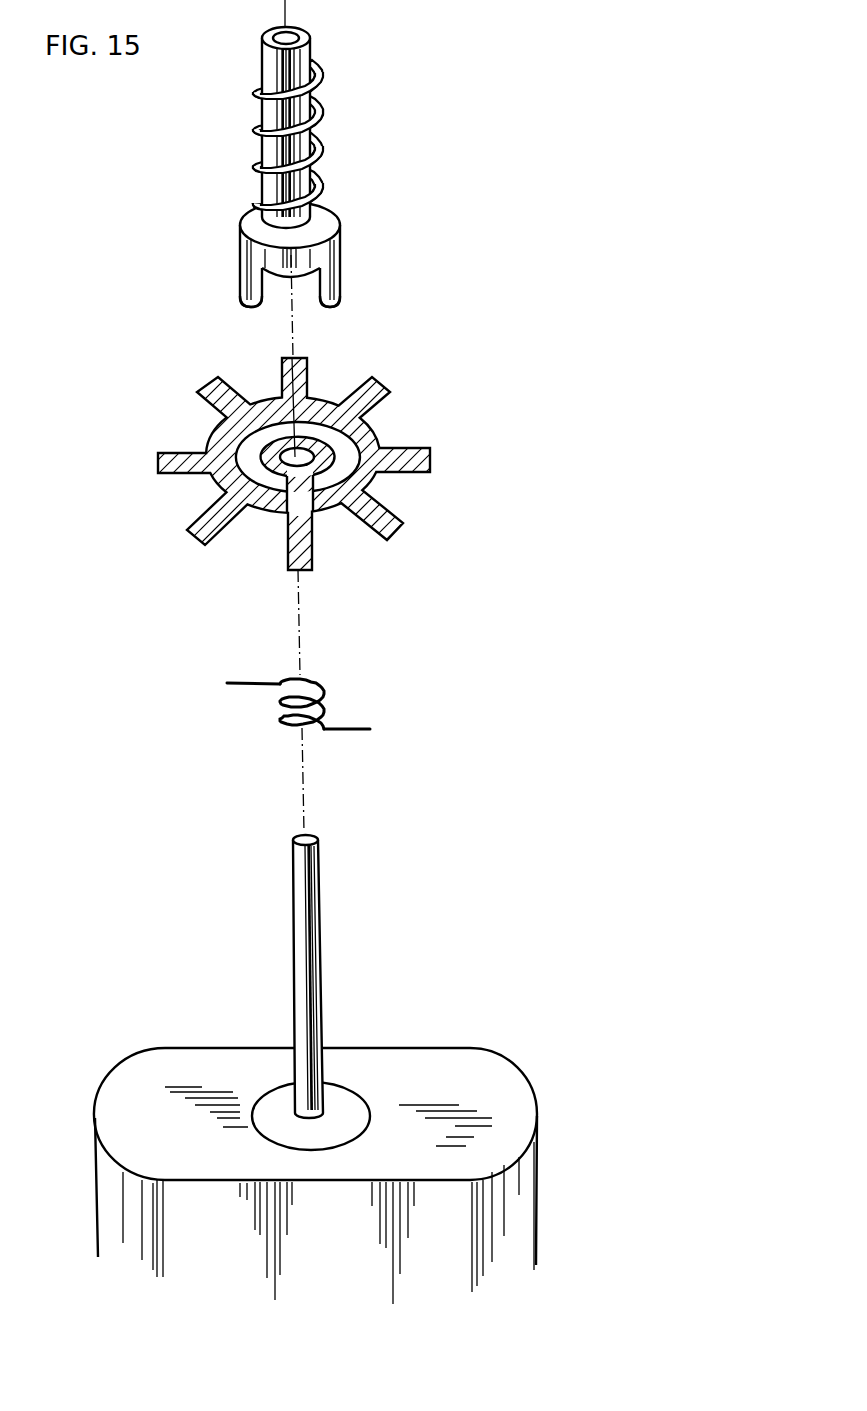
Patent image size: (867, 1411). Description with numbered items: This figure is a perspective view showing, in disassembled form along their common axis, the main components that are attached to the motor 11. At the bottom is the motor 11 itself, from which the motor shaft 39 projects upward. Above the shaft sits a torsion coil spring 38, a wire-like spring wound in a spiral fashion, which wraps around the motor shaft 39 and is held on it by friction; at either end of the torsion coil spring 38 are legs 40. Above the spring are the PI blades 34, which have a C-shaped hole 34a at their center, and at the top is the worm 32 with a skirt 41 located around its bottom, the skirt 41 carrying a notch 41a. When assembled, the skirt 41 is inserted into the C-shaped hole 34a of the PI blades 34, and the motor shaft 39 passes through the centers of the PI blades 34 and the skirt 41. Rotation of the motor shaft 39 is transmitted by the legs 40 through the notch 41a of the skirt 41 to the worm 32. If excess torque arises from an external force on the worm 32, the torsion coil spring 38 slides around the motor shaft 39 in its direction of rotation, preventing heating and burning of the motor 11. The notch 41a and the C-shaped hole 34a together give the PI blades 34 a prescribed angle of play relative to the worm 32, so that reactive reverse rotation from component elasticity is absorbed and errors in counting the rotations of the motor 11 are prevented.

The motor 11 is at (449, 1064).
The worm 32 is at (272, 138).
The PI blades 34 is at (330, 465).
The C-shaped hole 34a is at (343, 466).
The torsion coil spring 38 is at (313, 672).
The motor shaft 39 is at (318, 906).
The legs 40 is at (420, 760).
The skirt 41 is at (338, 256).
The notch 41a is at (370, 325).